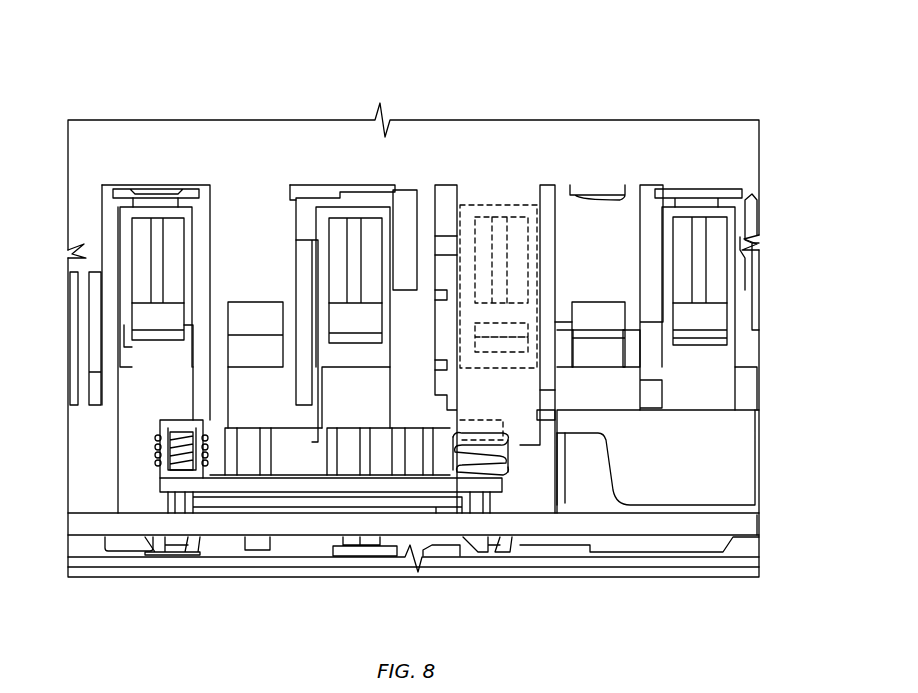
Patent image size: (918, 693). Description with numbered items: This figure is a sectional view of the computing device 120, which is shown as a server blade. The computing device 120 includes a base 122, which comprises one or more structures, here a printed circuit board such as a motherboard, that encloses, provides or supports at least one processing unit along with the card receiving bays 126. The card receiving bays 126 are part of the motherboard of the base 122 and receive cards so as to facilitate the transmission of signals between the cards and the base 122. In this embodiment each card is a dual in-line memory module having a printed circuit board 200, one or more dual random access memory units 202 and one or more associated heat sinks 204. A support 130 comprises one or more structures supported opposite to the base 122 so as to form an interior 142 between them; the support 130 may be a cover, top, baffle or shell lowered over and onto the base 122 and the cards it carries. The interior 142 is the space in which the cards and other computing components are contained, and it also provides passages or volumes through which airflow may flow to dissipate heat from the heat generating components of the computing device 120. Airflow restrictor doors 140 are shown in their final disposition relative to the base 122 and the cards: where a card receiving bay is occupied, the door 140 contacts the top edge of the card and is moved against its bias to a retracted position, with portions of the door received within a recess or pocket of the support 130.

The computing device 120 is at (740, 96).
The base 122 is at (197, 556).
The card receiving bays 126 is at (120, 390).
The support 130 is at (75, 145).
The airflow restrictor doors 140 is at (157, 190).
The interior 142 is at (707, 380).
The printed circuit board 200 is at (150, 258).
The dual random access memory units 202 is at (133, 232).
The heat sinks 204 is at (120, 283).